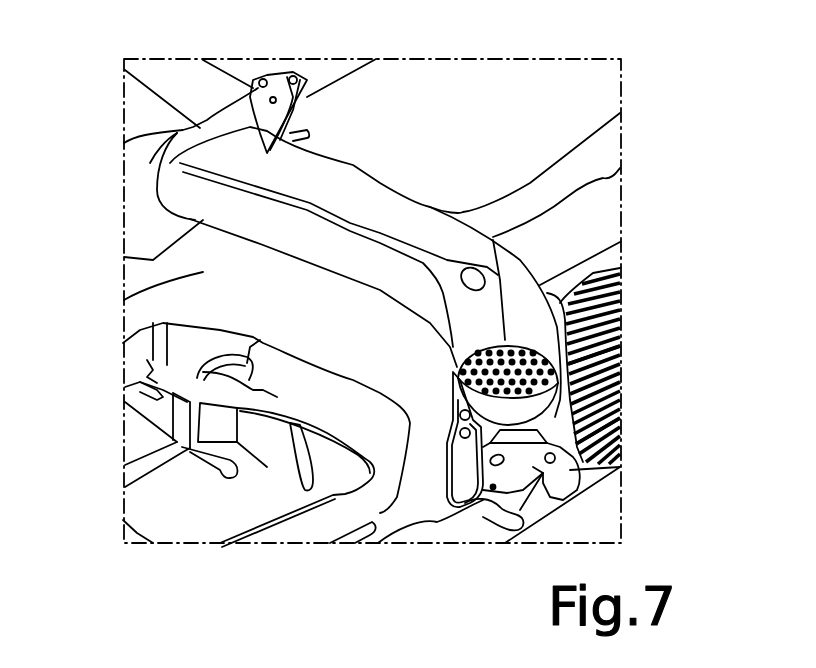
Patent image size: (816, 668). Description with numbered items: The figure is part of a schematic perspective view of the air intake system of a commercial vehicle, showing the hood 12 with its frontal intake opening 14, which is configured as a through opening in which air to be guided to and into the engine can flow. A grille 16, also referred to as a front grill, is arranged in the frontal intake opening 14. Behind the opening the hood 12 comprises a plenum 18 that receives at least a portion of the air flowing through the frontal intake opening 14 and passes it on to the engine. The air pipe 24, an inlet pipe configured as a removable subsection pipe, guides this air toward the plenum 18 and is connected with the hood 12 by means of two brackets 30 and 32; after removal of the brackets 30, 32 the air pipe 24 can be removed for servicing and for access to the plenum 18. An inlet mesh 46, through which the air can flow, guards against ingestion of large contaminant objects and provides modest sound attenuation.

The hood 12 is at (623, 125).
The frontal intake opening 14 is at (616, 274).
The grille 16 is at (540, 391).
The plenum 18 is at (180, 200).
The air pipe 24 is at (355, 200).
The bracket 30 is at (263, 78).
The bracket 32 is at (462, 490).
The inlet mesh 46 is at (620, 437).